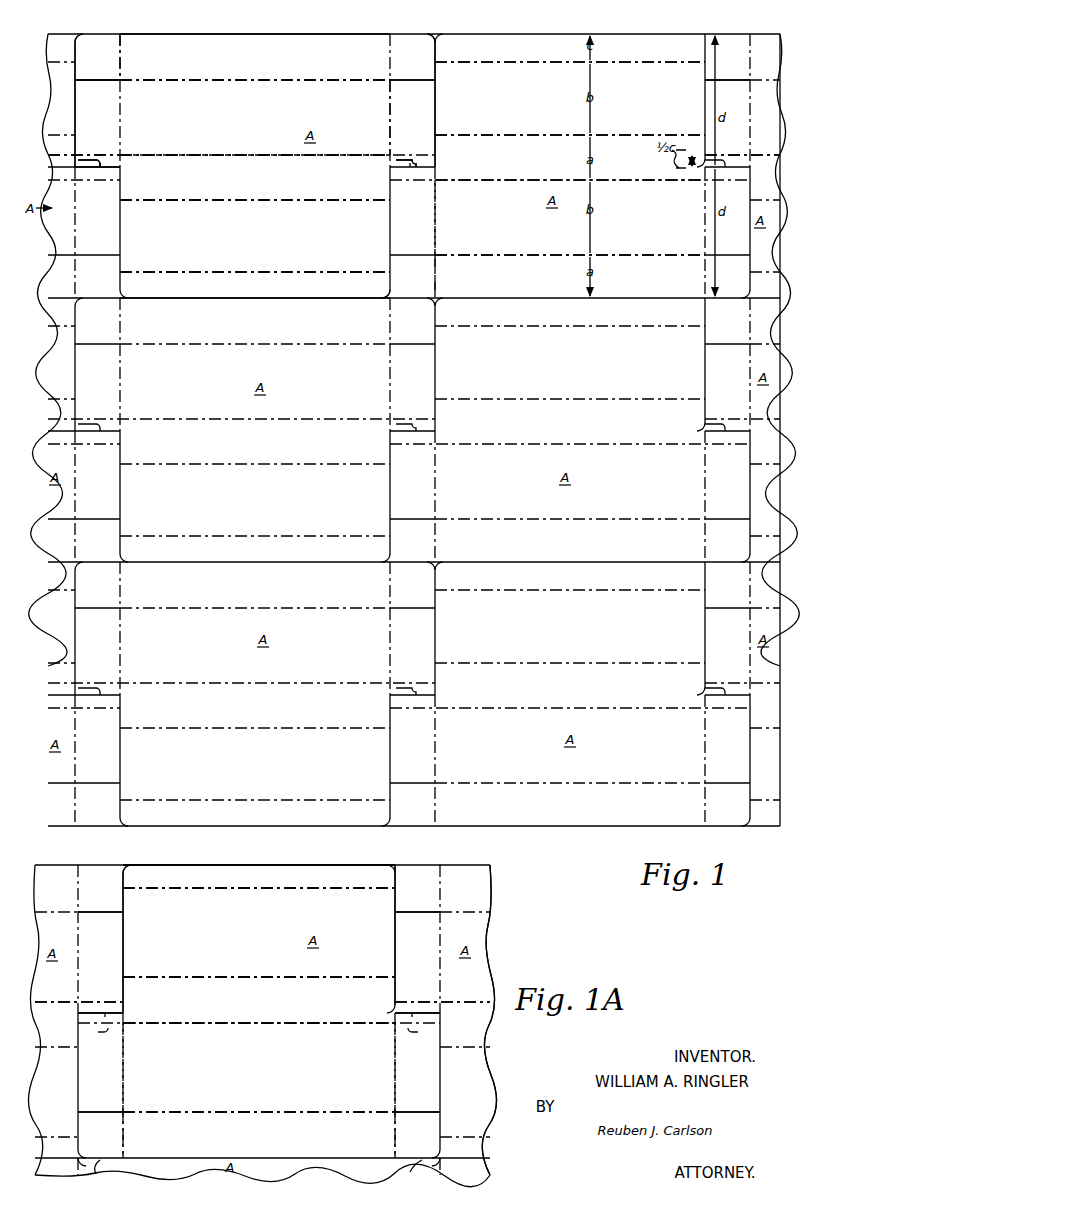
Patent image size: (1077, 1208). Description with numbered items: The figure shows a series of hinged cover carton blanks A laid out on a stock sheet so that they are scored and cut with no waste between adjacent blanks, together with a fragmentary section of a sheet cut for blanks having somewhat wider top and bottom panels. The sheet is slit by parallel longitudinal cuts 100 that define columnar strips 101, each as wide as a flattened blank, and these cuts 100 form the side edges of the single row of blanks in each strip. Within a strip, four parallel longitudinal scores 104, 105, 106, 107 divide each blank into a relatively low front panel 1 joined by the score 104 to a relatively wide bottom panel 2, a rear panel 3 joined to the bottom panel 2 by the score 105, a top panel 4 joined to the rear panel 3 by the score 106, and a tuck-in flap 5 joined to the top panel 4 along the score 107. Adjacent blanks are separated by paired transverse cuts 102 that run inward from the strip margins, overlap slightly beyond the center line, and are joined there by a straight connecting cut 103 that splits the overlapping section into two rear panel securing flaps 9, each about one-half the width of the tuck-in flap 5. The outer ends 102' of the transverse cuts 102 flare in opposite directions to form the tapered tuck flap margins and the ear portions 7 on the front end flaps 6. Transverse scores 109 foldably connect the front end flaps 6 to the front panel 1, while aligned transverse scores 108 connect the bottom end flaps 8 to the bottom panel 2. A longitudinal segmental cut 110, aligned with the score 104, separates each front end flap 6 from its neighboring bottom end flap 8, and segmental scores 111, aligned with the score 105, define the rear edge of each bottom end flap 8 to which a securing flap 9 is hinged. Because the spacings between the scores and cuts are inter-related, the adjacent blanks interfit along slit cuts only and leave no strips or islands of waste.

In FIG. 1, the front panel 1 is at (253, 58).
In FIG. 1A, the front panel 1 is at (254, 1133).
In FIG. 1, the bottom panel 2 is at (253, 121).
In FIG. 1A, the bottom panel 2 is at (254, 1066).
In FIG. 1, the rear panel 3 is at (253, 183).
In FIG. 1A, the rear panel 3 is at (254, 1001).
In FIG. 1, the top panel 4 is at (253, 243).
In FIG. 1A, the top panel 4 is at (254, 933).
In FIG. 1, the tuck-in flap 5 is at (253, 294).
In FIG. 1A, the tuck-in flap 5 is at (254, 883).
In FIG. 1, the front end flap 6 is at (91, 61).
In FIG. 1A, the front end flap 6 is at (92, 1133).
In FIG. 1, the ear portion 7 is at (432, 34).
In FIG. 1A, the ear portion 7 is at (259, 1166).
In FIG. 1, the bottom end flap 8 is at (91, 115).
In FIG. 1A, the bottom end flap 8 is at (92, 1065).
In FIG. 1, the rear panel securing flap 9 is at (118, 161).
In FIG. 1A, the rear panel securing flap 9 is at (116, 1012).
In FIG. 1, the longitudinal cut 100 is at (278, 34).
In FIG. 1A, the longitudinal cut 100 is at (342, 865).
In FIG. 1, the columnar strip 101 is at (780, 190).
In FIG. 1A, the columnar strip 101 is at (499, 1020).
In FIG. 1, the transverse cut 102 is at (385, 268).
In FIG. 1A, the transverse cut 102 is at (257, 976).
In FIG. 1, the flared end of transverse cut 102' is at (280, 155).
In FIG. 1A, the flared end of transverse cut 102' is at (280, 855).
In FIG. 1, the straight line connecting cut 103 is at (68, 156).
In FIG. 1A, the straight line connecting cut 103 is at (98, 1002).
In FIG. 1, the longitudinal score 104 is at (198, 78).
In FIG. 1A, the longitudinal score 104 is at (201, 1111).
In FIG. 1, the longitudinal score 105 is at (198, 154).
In FIG. 1A, the longitudinal score 105 is at (201, 1023).
In FIG. 1, the longitudinal score 106 is at (198, 198).
In FIG. 1A, the longitudinal score 106 is at (204, 976).
In FIG. 1, the longitudinal score 107 is at (198, 271).
In FIG. 1A, the longitudinal score 107 is at (206, 892).
In FIG. 1, the transverse score 108 is at (389, 109).
In FIG. 1A, the transverse score 108 is at (130, 1057).
In FIG. 1, the transverse score 109 is at (120, 60).
In FIG. 1A, the transverse score 109 is at (130, 1122).
In FIG. 1, the longitudinal segmental cut 110 is at (118, 83).
In FIG. 1A, the longitudinal segmental cut 110 is at (98, 912).
In FIG. 1, the longitudinal segmental score 111 is at (114, 154).
In FIG. 1A, the longitudinal segmental score 111 is at (118, 1032).